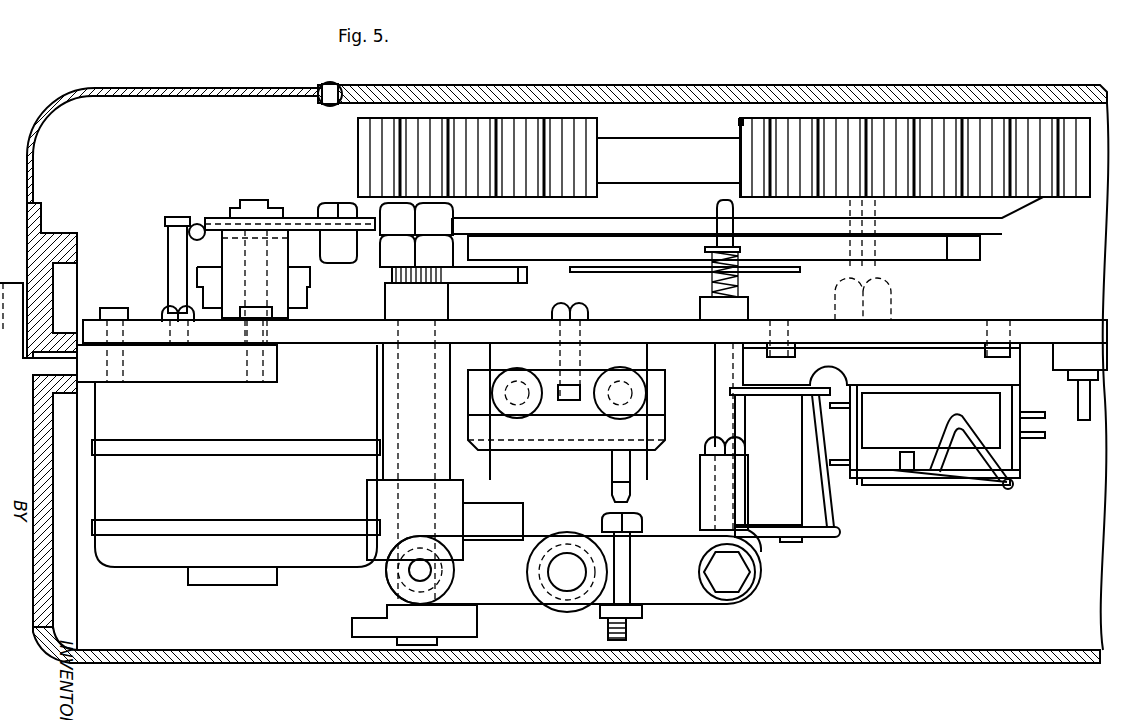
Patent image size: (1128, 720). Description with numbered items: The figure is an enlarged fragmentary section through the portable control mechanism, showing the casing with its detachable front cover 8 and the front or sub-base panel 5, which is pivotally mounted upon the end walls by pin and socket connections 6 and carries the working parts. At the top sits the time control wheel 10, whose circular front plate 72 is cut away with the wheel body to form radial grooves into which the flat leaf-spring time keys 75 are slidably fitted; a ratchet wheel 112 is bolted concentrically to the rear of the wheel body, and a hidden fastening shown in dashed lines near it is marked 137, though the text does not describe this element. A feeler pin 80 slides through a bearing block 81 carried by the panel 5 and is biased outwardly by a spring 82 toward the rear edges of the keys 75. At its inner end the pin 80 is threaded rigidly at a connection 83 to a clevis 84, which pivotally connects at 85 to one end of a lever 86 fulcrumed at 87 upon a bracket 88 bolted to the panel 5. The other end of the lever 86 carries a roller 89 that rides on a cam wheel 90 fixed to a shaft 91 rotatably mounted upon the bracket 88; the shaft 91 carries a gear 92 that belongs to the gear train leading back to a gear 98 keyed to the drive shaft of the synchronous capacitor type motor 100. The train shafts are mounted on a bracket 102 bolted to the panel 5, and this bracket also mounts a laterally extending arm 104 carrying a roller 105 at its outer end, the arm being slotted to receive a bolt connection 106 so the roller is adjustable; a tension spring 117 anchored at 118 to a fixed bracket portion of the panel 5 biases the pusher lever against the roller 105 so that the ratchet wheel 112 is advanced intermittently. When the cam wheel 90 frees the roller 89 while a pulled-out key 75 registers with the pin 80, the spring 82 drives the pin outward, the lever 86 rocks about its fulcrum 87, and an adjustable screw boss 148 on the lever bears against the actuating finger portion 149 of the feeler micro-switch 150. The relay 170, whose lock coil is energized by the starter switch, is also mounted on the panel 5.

The sub-base panel 5 is at (1032, 331).
The pin and socket connection 6 is at (47, 358).
The front cover 8 is at (38, 118).
The time control wheel 10 is at (898, 110).
The circular front plate 72 is at (652, 156).
The time key 75 is at (742, 118).
The feeler pin 80 is at (722, 210).
The bearing block 81 is at (712, 310).
The spring 82 is at (712, 258).
The threaded connection 83 is at (712, 450).
The clevis 84 is at (742, 545).
The pivot connection 85 is at (743, 600).
The lever 86 is at (688, 597).
The fulcrum 87 is at (563, 582).
The bracket 88 is at (532, 517).
The roller 89 is at (381, 578).
The cam wheel 90 is at (465, 615).
The shaft 91 is at (428, 469).
The gear 92 is at (485, 272).
The gear 98 is at (306, 306).
The synchronous capacitor type motor 100 is at (167, 556).
The bracket 102 is at (285, 212).
The arm 104 is at (215, 218).
The roller 105 is at (323, 242).
The bolt connection 106 is at (272, 193).
The ratchet wheel 112 is at (962, 250).
The tension spring 117 is at (195, 226).
The spring connection 118 is at (170, 220).
The hidden bolt 137 is at (853, 228).
The adjustable screw boss 148 is at (636, 520).
The actuating finger portion 149 is at (623, 495).
The micro-switch 150 is at (566, 391).
The relay 170 is at (930, 460).